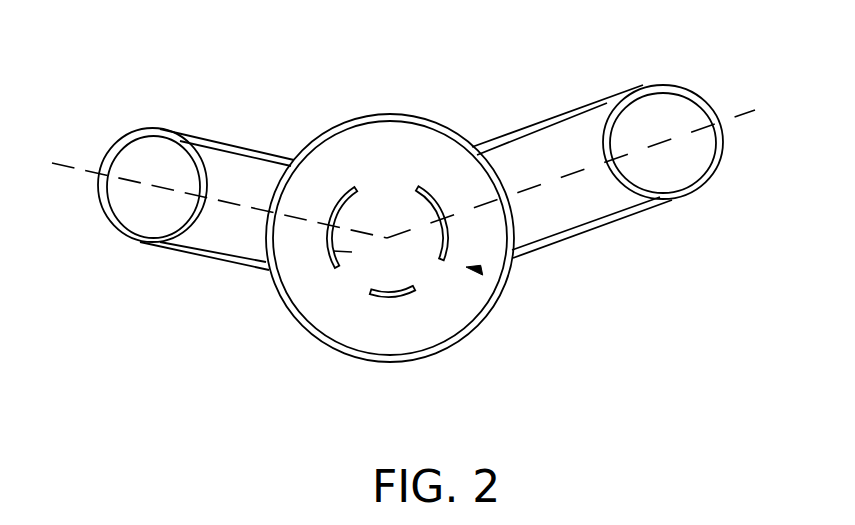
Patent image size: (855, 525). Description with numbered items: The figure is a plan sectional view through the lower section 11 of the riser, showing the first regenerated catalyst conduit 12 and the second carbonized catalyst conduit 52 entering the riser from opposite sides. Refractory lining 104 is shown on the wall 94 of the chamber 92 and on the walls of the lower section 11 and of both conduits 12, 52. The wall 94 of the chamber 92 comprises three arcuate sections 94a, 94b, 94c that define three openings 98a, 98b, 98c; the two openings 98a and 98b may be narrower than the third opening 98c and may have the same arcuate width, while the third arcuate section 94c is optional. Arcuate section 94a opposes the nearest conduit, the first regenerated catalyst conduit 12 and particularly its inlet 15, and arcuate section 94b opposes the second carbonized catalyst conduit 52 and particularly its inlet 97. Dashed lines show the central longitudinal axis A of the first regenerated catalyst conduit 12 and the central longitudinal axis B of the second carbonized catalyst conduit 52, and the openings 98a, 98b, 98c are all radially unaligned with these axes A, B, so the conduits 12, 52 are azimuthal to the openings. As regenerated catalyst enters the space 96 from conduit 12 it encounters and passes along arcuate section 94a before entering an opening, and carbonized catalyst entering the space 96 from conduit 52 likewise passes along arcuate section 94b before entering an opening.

The central longitudinal axis A is at (78, 170).
The central longitudinal axis B is at (730, 118).
The lower section of the riser 11 is at (340, 128).
The first regenerated catalyst conduit 12 is at (183, 256).
The inlet 15 is at (270, 214).
The second carbonized catalyst conduit 52 is at (603, 108).
The chamber 92 is at (333, 251).
The wall of the chamber 94 is at (480, 276).
The arcuate section 94a is at (325, 243).
The arcuate section 94b is at (516, 254).
The arcuate section 94c is at (377, 298).
The space 96 is at (312, 200).
The inlet 97 is at (510, 212).
The opening 98a is at (357, 287).
The opening 98b is at (435, 282).
The opening 98c is at (377, 193).
The refractory lining 104 is at (225, 150).